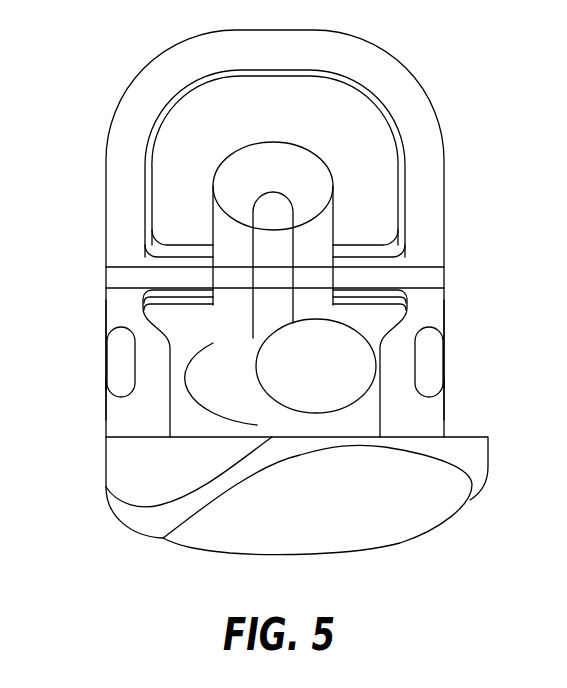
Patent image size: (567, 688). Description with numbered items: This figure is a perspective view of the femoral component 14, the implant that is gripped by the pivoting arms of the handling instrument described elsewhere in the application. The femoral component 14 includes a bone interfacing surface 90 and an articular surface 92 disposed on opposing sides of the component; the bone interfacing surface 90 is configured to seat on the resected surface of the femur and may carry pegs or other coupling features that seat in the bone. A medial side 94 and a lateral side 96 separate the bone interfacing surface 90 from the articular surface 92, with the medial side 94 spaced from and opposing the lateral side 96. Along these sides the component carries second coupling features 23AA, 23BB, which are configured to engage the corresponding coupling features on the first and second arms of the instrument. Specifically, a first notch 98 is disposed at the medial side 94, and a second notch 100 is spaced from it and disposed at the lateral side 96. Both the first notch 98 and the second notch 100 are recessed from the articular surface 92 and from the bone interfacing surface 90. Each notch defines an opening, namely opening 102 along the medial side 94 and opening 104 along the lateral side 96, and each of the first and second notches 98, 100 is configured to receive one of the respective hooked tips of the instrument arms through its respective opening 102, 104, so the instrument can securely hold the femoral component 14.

The femoral component 14 is at (417, 48).
The bone interfacing surface 90 is at (370, 158).
The articular surface 92 is at (377, 530).
The medial side 94 is at (100, 272).
The lateral side 96 is at (452, 410).
The first notch 98 is at (122, 364).
The second notch 100 is at (427, 364).
The opening 102 is at (101, 340).
The opening 104 is at (448, 340).
The second coupling feature 23AA is at (101, 384).
The second coupling feature 23BB is at (447, 382).